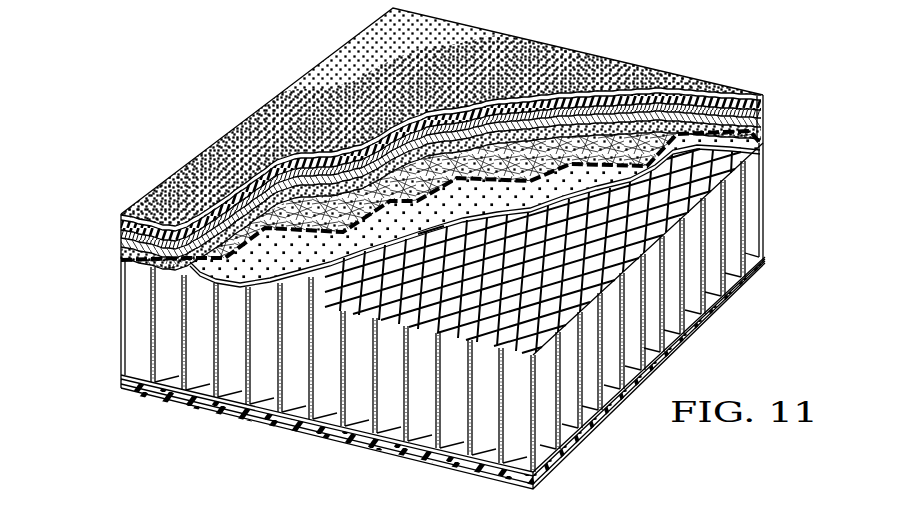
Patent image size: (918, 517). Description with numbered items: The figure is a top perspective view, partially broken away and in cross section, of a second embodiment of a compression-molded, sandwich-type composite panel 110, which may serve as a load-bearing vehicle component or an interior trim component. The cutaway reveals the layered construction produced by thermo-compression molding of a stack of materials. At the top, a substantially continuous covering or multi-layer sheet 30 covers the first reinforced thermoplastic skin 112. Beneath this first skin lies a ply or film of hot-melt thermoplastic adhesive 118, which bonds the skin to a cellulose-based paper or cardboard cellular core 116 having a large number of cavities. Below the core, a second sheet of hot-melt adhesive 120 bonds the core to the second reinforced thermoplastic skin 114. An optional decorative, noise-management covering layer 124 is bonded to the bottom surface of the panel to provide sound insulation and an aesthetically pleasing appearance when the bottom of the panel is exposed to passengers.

The composite panel 110 is at (627, 51).
The multi-layer sheet 30 is at (769, 90).
The first reinforced thermoplastic skin 112 is at (119, 253).
The hot-melt adhesive sheet 118 is at (270, 268).
The cellular core 116 is at (118, 331).
The hot-melt adhesive sheet 120 is at (134, 373).
The covering layer 124 is at (152, 398).
The second reinforced thermoplastic skin 114 is at (121, 387).